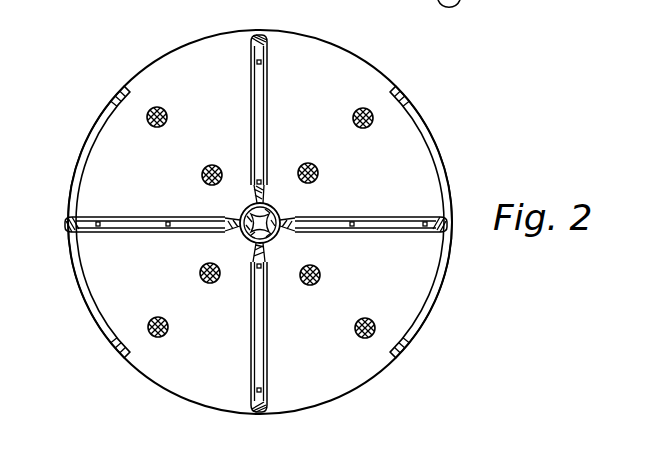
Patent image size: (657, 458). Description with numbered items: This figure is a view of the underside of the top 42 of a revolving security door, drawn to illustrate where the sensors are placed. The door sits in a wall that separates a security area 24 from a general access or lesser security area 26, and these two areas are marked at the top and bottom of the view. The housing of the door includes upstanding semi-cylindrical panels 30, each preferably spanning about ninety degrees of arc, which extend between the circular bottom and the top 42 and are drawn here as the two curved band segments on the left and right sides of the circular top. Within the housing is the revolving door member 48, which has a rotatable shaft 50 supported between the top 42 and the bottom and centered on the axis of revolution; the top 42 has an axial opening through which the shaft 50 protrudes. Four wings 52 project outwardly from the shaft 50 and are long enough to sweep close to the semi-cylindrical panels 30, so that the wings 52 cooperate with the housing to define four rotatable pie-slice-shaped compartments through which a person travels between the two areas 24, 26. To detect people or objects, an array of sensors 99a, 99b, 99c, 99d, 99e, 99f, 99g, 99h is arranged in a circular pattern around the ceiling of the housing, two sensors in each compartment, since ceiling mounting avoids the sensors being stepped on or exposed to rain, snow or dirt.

The security area 24 is at (274, 24).
The general access or lesser security area 26 is at (275, 444).
The semi-cylindrical panel 30 is at (96, 115).
The top 42 is at (333, 328).
The revolving door member 48 is at (284, 210).
The rotatable shaft 50 is at (253, 246).
The wing 52 is at (250, 97).
The sensor 99a is at (158, 317).
The sensor 99b is at (206, 284).
The sensor 99c is at (160, 107).
The sensor 99d is at (204, 168).
The sensor 99e is at (319, 170).
The sensor 99f is at (367, 108).
The sensor 99g is at (321, 280).
The sensor 99h is at (355, 336).